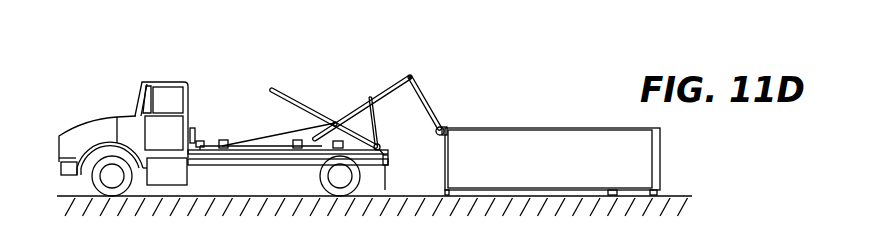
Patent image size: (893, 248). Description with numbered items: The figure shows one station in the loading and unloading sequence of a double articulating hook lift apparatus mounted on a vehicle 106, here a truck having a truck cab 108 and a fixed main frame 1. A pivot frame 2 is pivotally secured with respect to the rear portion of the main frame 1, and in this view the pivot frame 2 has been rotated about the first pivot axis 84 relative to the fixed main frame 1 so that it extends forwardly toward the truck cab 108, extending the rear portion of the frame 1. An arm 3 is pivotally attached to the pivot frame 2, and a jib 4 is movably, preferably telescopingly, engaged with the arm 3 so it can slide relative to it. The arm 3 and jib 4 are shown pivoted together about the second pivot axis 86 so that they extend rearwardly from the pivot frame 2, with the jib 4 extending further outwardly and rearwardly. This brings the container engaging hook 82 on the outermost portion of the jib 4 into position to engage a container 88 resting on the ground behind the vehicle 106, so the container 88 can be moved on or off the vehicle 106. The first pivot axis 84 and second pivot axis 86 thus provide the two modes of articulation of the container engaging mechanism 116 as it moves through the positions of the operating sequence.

The main frame 1 is at (235, 162).
The pivot frame 2 is at (295, 99).
The arm 3 is at (370, 97).
The jib 4 is at (425, 100).
The hook 82 is at (441, 126).
The first pivot axis 84 is at (383, 146).
The second pivot axis 86 is at (335, 131).
The container 88 is at (500, 127).
The vehicle 106 is at (157, 182).
The truck cab 108 is at (148, 82).
The container engaging mechanism 116 is at (335, 124).